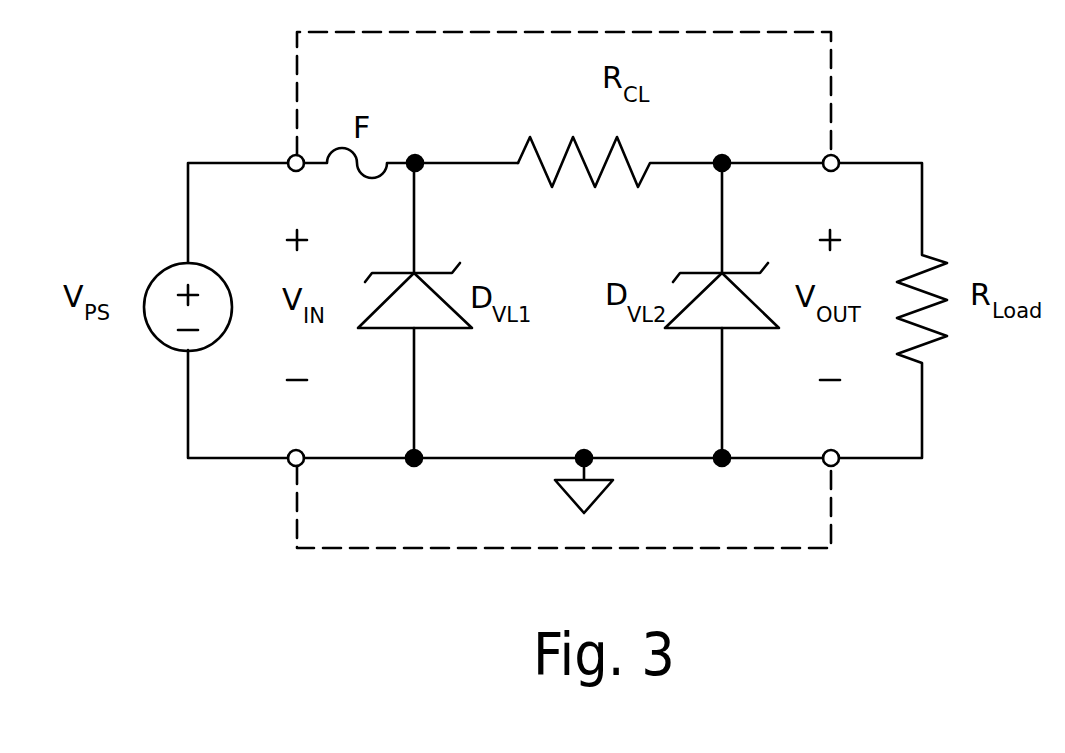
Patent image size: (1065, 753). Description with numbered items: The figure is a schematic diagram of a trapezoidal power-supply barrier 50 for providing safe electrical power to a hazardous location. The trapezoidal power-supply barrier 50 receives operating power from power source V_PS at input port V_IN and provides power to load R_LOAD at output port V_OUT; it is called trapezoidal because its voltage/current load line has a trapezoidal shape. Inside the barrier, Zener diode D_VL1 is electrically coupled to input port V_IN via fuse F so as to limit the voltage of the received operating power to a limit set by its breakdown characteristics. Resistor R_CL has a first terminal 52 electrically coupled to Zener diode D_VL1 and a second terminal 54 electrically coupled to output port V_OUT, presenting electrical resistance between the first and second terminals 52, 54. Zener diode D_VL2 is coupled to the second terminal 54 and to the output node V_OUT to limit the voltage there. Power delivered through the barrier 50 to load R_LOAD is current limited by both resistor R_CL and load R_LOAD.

The trapezoidal power-supply barrier 50 is at (376, 67).
The first terminal 52 is at (482, 150).
The second terminal 54 is at (797, 150).